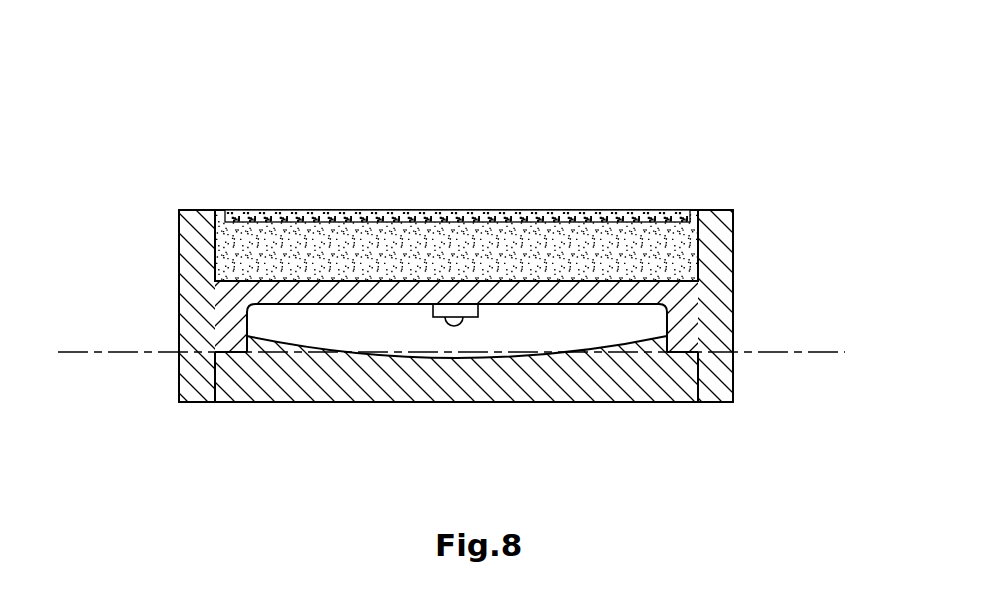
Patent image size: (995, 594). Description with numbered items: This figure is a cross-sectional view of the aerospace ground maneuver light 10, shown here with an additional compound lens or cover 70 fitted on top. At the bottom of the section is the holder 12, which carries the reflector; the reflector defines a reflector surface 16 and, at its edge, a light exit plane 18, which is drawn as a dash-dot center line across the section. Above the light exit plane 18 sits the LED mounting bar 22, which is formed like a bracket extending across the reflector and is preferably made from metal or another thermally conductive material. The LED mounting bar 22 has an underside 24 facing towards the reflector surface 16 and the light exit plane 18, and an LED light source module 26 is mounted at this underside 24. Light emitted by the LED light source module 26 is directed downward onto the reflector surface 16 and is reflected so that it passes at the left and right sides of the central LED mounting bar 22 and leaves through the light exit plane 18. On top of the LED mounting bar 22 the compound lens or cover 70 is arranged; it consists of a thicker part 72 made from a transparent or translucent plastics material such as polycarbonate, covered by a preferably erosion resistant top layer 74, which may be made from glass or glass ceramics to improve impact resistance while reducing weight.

The light 10 is at (160, 151).
The holder 12 is at (338, 380).
The reflector surface 16 is at (606, 343).
The light exit plane 18 is at (107, 352).
The LED mounting bar 22 is at (315, 292).
The underside 24 is at (383, 314).
The LED light source module 26 is at (458, 322).
The lens or cover 70 is at (421, 147).
The thicker part 72 is at (500, 252).
The top layer 74 is at (566, 220).